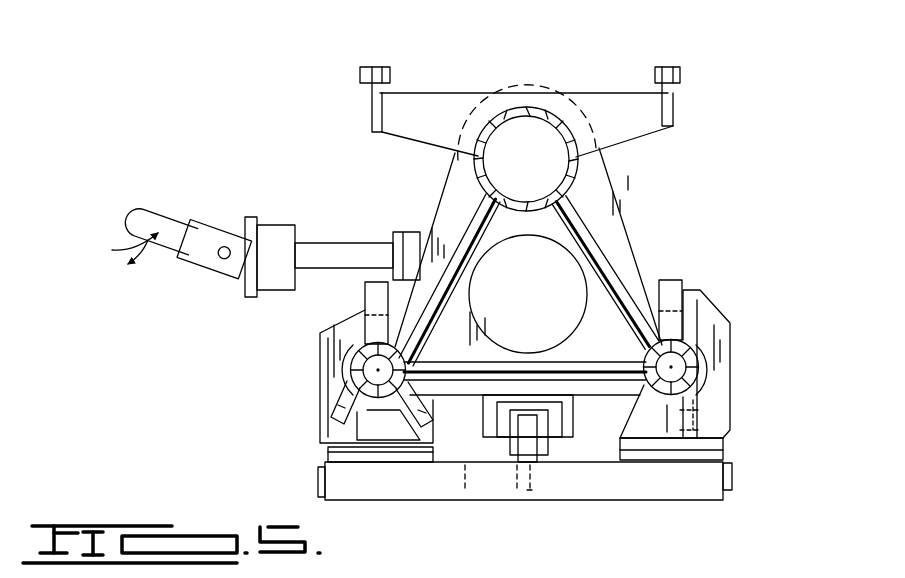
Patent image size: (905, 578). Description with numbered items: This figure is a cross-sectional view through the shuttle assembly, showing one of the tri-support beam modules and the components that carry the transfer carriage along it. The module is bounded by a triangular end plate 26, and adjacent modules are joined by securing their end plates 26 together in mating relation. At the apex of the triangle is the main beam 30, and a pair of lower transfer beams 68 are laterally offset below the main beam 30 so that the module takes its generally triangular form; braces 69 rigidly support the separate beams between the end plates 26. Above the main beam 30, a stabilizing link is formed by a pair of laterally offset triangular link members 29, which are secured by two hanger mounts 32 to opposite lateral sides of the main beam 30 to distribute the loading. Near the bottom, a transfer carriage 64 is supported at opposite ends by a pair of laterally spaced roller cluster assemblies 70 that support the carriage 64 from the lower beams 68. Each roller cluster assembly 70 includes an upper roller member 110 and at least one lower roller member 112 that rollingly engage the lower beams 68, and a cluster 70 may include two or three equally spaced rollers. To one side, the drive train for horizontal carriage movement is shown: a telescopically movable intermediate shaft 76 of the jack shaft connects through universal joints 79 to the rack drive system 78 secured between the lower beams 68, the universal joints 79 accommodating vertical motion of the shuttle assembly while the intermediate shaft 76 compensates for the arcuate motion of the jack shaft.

The triangular end plate 26 is at (610, 213).
The triangular link member 29 is at (378, 106).
The main beam 30 is at (550, 117).
The hanger mount 32 is at (636, 122).
The transfer carriage 64 is at (697, 487).
The lower transfer beam 68 is at (357, 380).
The brace 69 is at (528, 367).
The roller cluster assembly 70 is at (316, 352).
The intermediate shaft 76 is at (160, 222).
The rack drive system 78 is at (403, 228).
The universal joint 79 is at (272, 237).
The upper roller member 110 is at (373, 302).
The lower roller member 112 is at (347, 422).